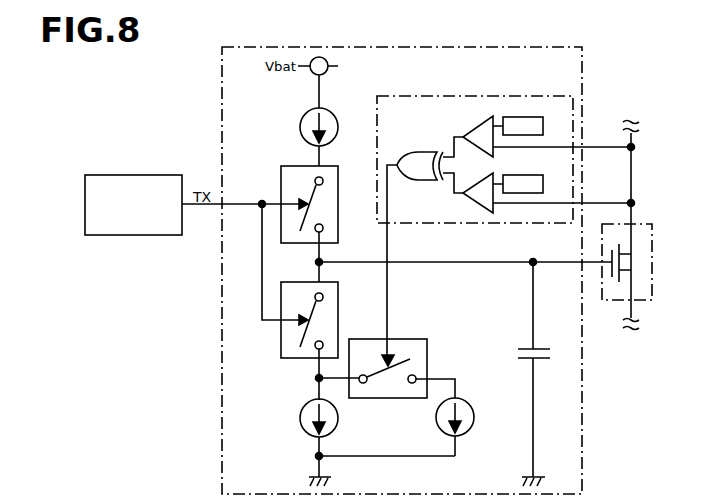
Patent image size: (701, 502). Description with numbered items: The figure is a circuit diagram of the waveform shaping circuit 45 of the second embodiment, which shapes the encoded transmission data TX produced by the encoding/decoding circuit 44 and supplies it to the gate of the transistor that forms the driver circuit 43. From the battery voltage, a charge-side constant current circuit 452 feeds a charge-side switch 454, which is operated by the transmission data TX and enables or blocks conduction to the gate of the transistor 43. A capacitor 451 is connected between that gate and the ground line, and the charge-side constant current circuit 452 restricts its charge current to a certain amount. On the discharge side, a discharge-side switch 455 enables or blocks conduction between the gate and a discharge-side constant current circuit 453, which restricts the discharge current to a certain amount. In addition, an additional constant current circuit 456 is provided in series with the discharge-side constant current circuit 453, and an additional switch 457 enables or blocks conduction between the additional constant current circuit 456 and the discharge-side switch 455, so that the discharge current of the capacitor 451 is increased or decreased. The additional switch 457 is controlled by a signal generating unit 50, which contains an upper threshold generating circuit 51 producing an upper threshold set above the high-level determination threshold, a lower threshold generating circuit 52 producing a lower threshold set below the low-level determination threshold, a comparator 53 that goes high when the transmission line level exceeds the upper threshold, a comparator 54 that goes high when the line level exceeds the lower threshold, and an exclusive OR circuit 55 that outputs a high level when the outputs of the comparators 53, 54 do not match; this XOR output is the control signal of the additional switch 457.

The driver circuit 43 is at (638, 224).
The encoding/decoding circuit 44 is at (107, 175).
The waveform shaping circuit 45 is at (551, 47).
The signal generating unit 50 is at (396, 96).
The upper threshold generating circuit 51 is at (543, 117).
The lower threshold generating circuit 52 is at (543, 175).
The comparator 53 is at (478, 127).
The comparator 54 is at (478, 204).
The exclusive OR circuit 55 is at (424, 150).
The capacitor 451 is at (543, 347).
The charge-side constant current circuit 452 is at (300, 128).
The discharge-side constant current circuit 453 is at (300, 419).
The charge-side switch 454 is at (339, 234).
The discharge-side switch 455 is at (280, 350).
The additional constant current circuit 456 is at (476, 418).
The additional switch 457 is at (417, 339).